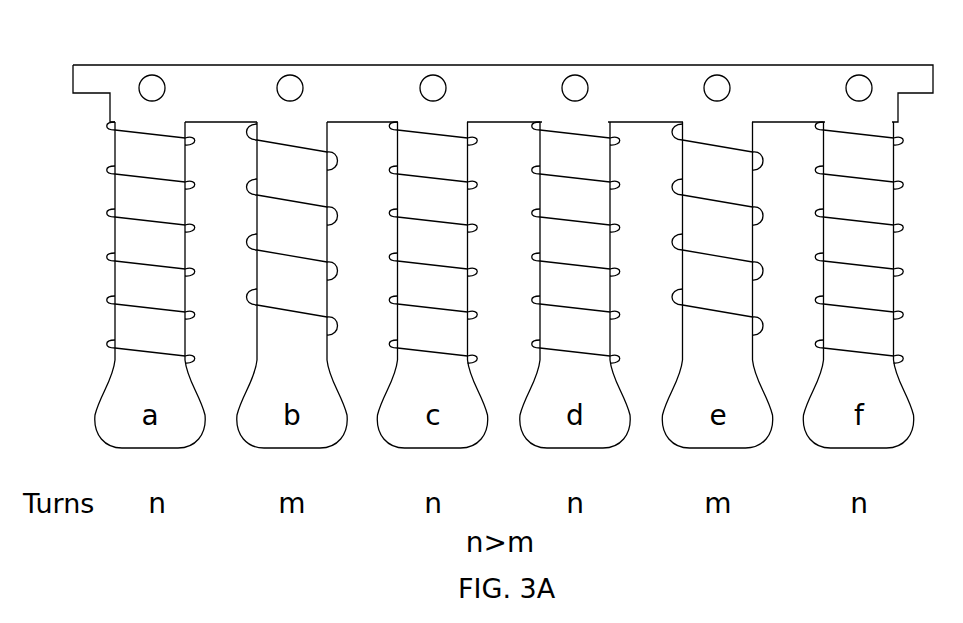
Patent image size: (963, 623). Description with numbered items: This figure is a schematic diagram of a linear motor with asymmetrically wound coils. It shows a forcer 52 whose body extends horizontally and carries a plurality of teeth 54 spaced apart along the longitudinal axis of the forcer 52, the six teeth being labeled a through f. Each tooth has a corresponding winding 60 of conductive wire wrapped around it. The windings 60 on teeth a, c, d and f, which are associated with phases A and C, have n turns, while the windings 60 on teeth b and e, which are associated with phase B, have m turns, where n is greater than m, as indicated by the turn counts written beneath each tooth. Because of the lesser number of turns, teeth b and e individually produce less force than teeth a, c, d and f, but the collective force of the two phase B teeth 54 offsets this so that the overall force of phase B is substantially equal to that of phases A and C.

The forcer 52 is at (289, 64).
The teeth 54 is at (132, 242).
The winding 60 is at (116, 266).